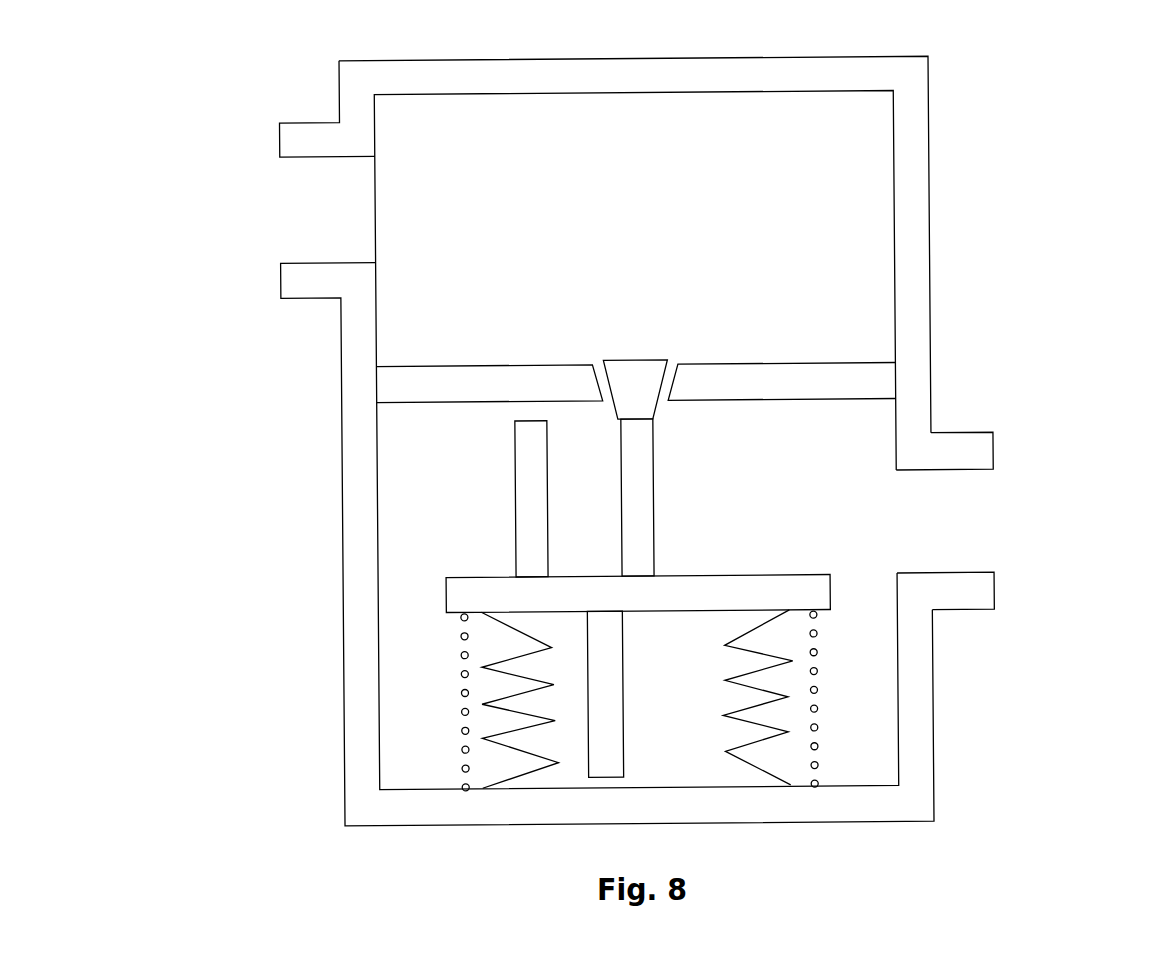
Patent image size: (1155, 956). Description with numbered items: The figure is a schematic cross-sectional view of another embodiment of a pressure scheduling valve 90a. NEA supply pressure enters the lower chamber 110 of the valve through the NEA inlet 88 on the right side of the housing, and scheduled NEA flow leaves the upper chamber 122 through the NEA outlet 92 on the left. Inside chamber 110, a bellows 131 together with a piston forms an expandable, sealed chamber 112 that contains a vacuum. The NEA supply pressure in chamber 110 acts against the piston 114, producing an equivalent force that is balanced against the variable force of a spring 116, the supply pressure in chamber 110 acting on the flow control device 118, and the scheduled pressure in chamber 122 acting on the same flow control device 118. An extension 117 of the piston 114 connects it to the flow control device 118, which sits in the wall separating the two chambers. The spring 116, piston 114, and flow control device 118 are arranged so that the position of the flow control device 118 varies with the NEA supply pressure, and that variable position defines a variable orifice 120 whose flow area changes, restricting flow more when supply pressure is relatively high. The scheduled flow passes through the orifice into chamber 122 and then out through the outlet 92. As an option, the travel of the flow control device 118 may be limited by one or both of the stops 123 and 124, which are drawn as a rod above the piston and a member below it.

The NEA inlet 88 is at (984, 510).
The pressure scheduling valve 90a is at (937, 162).
The NEA outlet 92 is at (265, 172).
The chamber 110 is at (736, 528).
The sealed chamber 112 is at (705, 726).
The piston 114 is at (722, 591).
The spring 116 is at (824, 670).
The extension 117 is at (637, 488).
The flow control device 118 is at (651, 368).
The variable orifice 120 is at (598, 357).
The chamber 122 is at (653, 196).
The stop 123 is at (540, 464).
The stop 124 is at (601, 673).
The bellows 131 is at (493, 695).